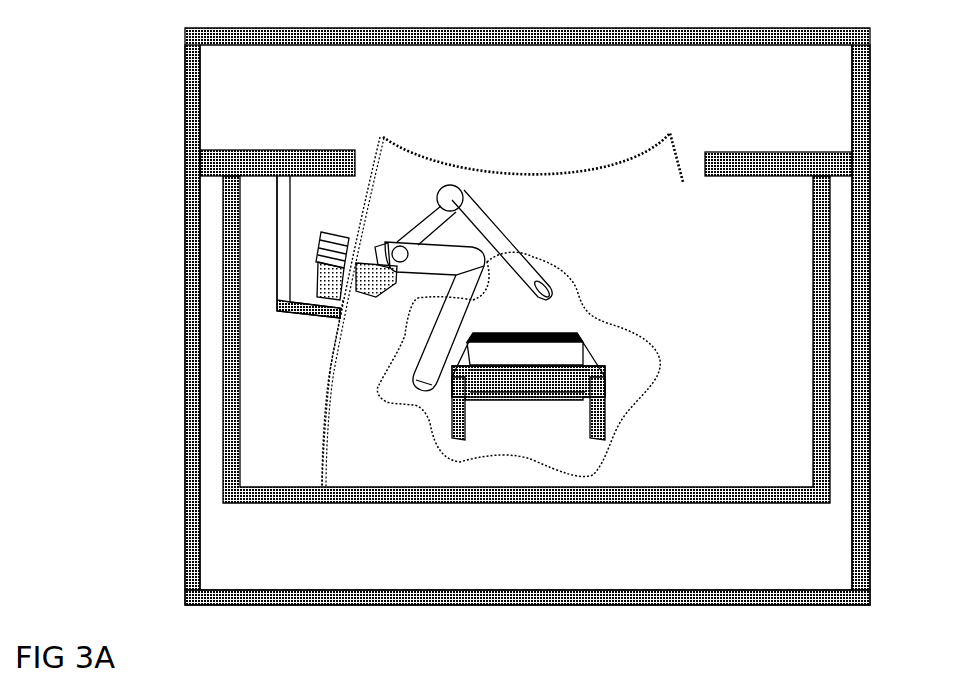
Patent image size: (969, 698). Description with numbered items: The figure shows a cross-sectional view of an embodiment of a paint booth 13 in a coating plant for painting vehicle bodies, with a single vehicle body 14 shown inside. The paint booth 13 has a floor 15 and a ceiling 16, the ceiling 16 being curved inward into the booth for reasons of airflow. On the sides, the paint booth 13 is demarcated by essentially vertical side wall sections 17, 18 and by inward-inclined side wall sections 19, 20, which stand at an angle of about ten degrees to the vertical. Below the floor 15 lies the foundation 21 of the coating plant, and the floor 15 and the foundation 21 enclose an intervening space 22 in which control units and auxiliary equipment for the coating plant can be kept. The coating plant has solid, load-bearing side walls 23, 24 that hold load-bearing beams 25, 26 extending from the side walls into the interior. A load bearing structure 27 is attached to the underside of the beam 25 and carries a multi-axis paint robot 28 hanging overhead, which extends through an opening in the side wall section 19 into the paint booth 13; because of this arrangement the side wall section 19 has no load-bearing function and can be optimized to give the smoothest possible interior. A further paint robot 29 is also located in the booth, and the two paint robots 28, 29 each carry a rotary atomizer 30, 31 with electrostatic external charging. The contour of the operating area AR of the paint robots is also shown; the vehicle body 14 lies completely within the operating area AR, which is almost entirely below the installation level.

The paint booth 13 is at (372, 144).
The vehicle body 14 is at (612, 400).
The floor 15 is at (678, 497).
The ceiling 16 is at (536, 178).
The side wall section 17 is at (324, 464).
The side wall section 18 is at (727, 448).
The side wall section 19 is at (333, 353).
The side wall section 20 is at (696, 259).
The foundation 21 is at (500, 604).
The intervening space 22 is at (235, 555).
The side wall 23 is at (188, 367).
The side wall 24 is at (862, 403).
The load-bearing beam 25 is at (298, 165).
The load-bearing beam 26 is at (737, 168).
The load bearing structure 27 is at (284, 258).
The paint robot 28 is at (522, 245).
The paint robot 29 is at (422, 340).
The rotary atomizer 30 is at (565, 314).
The rotary atomizer 31 is at (429, 407).
The operating area AR is at (656, 447).